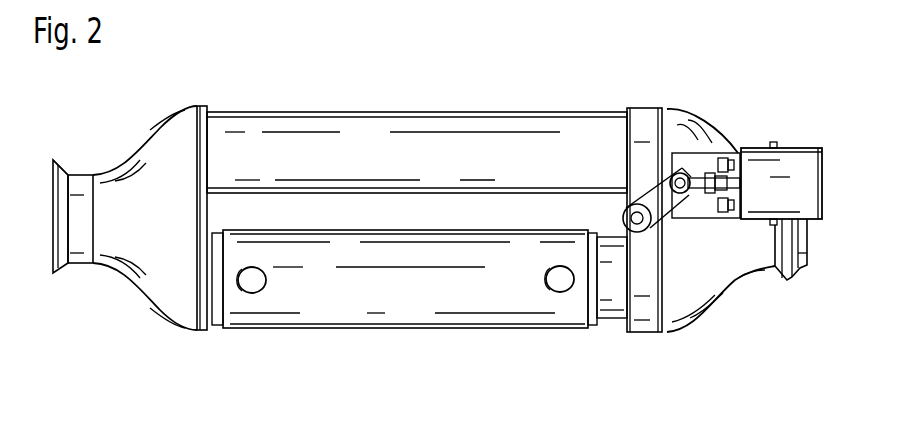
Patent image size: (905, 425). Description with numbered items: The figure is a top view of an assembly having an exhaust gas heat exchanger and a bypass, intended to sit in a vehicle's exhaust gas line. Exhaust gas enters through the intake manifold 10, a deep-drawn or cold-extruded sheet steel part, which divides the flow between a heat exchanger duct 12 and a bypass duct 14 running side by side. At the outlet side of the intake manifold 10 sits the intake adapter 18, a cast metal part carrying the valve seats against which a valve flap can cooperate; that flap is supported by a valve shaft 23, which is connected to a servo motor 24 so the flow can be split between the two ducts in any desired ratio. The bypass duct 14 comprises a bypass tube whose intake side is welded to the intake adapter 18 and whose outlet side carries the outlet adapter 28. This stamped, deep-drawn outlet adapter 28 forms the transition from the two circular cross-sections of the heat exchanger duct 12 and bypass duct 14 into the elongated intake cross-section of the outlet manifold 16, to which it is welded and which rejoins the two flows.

The intake manifold 10 is at (712, 278).
The heat exchanger duct 12 is at (342, 302).
The bypass duct 14 is at (372, 133).
The outlet manifold 16 is at (157, 152).
The intake adapter 18 is at (645, 125).
The valve shaft 23 is at (641, 224).
The servo motor 24 is at (803, 165).
The outlet adapter 28 is at (210, 124).